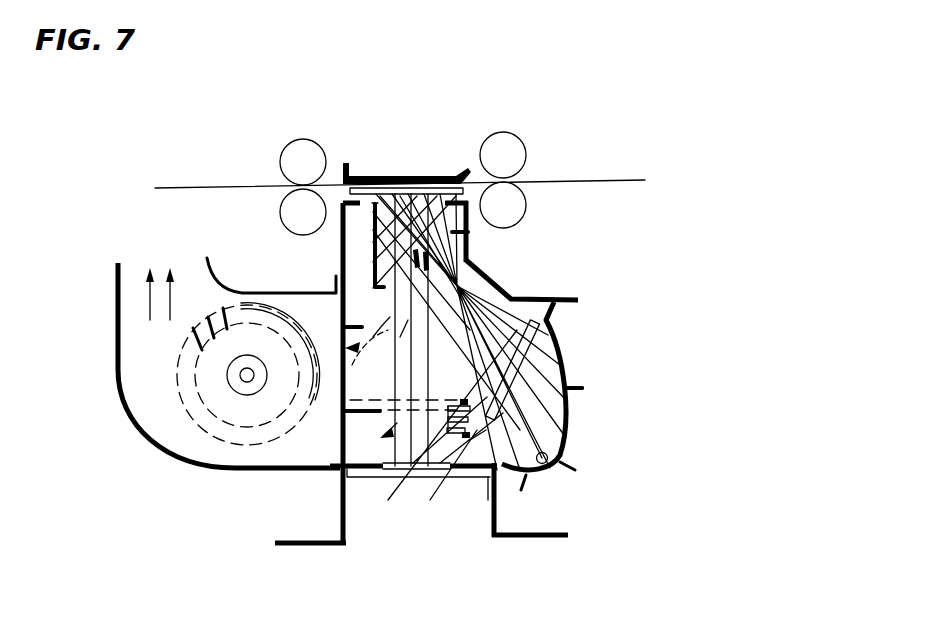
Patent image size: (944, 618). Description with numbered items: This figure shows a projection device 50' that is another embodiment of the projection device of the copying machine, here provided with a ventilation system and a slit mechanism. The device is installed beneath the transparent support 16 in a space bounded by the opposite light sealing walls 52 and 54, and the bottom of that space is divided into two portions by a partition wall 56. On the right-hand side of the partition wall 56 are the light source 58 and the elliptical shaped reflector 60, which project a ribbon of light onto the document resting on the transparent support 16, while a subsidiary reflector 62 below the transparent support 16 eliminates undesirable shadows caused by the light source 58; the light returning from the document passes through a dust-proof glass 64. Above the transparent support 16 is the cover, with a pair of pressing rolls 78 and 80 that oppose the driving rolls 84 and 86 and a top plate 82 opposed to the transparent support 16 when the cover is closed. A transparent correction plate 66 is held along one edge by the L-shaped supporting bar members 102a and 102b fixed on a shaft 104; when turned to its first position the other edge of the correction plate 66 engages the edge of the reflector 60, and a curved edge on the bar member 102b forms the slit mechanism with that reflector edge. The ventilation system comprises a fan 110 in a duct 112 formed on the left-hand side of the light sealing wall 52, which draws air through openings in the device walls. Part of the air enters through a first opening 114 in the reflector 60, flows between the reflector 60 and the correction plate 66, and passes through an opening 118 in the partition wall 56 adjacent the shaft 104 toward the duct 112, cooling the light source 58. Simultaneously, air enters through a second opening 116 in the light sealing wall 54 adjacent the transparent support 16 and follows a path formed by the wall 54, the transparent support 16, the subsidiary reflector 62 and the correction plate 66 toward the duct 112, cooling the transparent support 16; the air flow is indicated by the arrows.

The transparent support 16 is at (373, 190).
The projection device 50' is at (587, 514).
The light sealing wall 52 is at (334, 268).
The light sealing wall 54 is at (505, 280).
The partition wall 56 is at (540, 538).
The light source 58 is at (555, 465).
The elliptical shaped reflector 60 is at (560, 370).
The subsidiary reflector 62 is at (370, 243).
The dust-proof glass 64 is at (362, 471).
The transparent correction plate 66 is at (560, 343).
The pressing roll 78 is at (294, 158).
The pressing roll 80 is at (508, 150).
The top plate 82 is at (422, 176).
The driving roll 84 is at (293, 210).
The driving roll 86 is at (514, 203).
The supporting bar member 102a is at (445, 425).
The supporting bar member 102b is at (478, 445).
The shaft 104 is at (462, 440).
The fan 110 is at (187, 373).
The duct 112 is at (285, 450).
The first opening 114 is at (572, 410).
The second opening 116 is at (470, 217).
The opening 118 is at (481, 490).